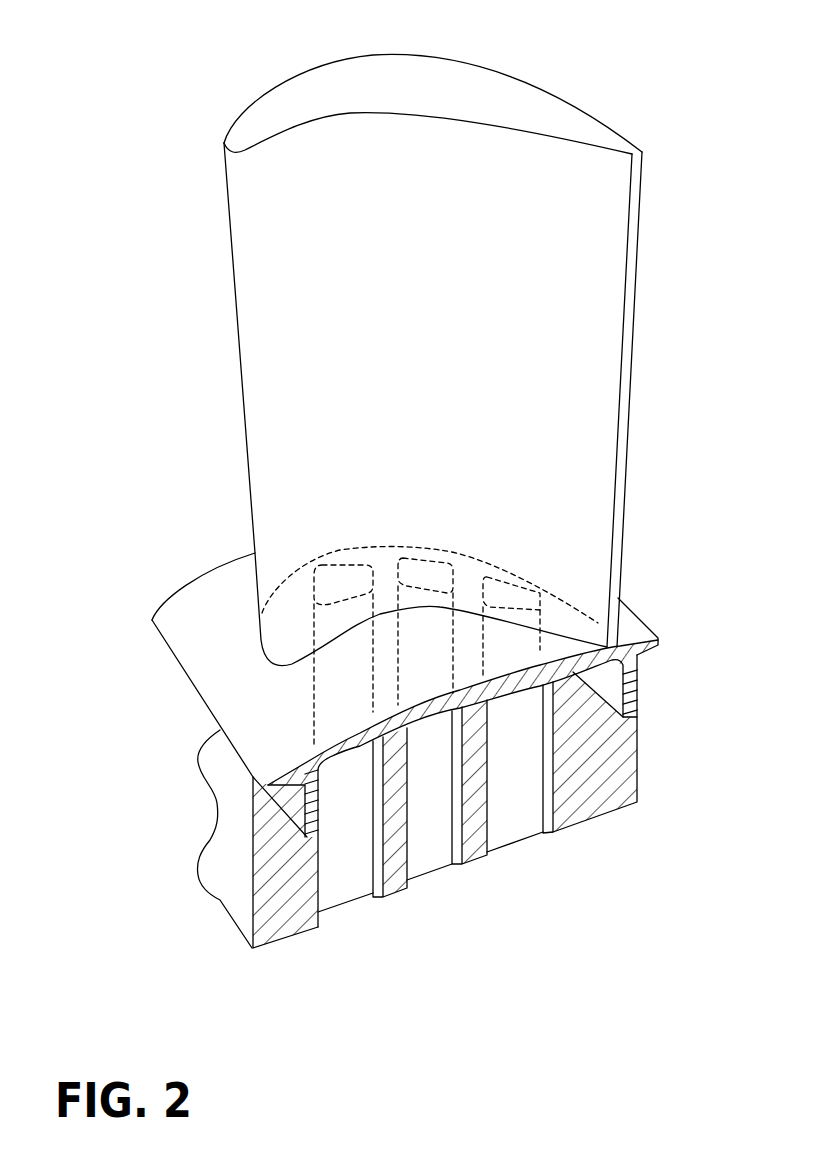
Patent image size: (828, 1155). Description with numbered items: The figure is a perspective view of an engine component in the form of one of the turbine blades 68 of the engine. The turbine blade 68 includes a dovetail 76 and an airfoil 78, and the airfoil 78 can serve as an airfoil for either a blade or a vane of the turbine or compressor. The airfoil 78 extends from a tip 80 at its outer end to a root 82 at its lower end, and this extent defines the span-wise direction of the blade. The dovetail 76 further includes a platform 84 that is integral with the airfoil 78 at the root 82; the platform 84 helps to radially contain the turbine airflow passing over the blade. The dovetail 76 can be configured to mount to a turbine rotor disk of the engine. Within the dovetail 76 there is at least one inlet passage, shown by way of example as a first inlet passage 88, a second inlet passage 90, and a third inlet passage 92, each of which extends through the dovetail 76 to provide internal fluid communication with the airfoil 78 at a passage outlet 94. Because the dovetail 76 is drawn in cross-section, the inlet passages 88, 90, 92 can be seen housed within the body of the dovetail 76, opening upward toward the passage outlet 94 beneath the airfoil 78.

The turbine blade 68 is at (100, 157).
The dovetail 76 is at (238, 827).
The airfoil 78 is at (372, 333).
The tip 80 is at (317, 97).
The root 82 is at (568, 625).
The platform 84 is at (217, 657).
The first inlet passage 88 is at (352, 928).
The second inlet passage 90 is at (435, 906).
The third inlet passage 92 is at (513, 873).
The passage outlet 94 is at (333, 557).